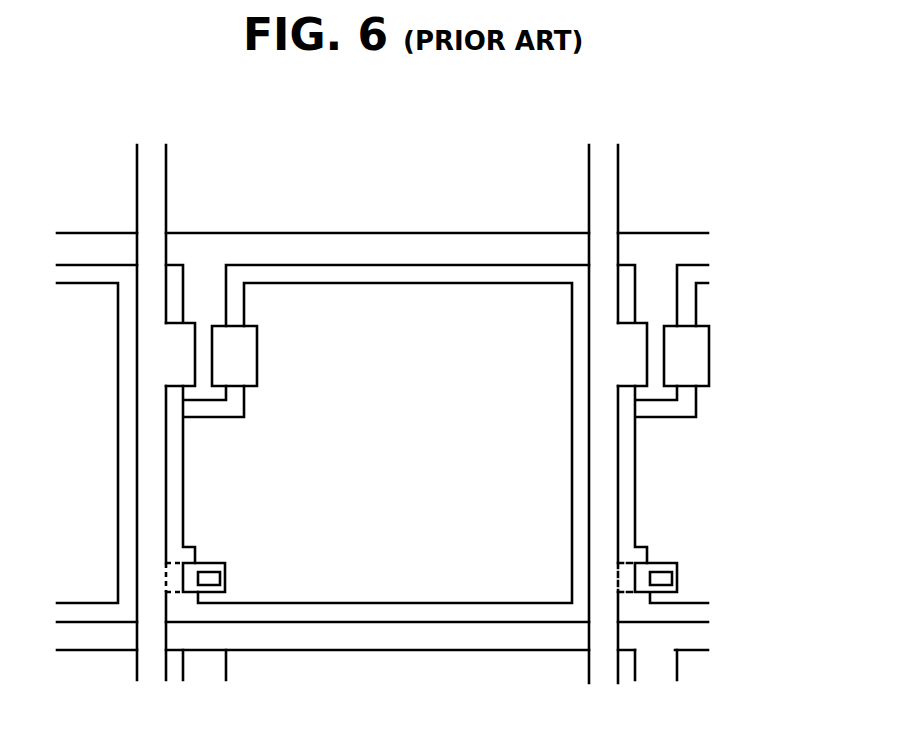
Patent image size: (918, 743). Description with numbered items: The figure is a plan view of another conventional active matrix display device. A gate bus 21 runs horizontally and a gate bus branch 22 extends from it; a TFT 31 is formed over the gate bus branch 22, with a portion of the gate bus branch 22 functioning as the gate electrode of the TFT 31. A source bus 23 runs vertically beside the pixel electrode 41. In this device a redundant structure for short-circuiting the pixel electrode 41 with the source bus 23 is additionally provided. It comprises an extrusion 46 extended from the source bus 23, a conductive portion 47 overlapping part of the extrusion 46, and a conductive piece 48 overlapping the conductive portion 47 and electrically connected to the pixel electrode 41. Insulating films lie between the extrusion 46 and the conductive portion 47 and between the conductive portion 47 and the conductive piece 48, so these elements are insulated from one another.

The gate bus 21 is at (460, 248).
The gate bus branch 22 is at (195, 303).
The source bus 23 is at (157, 177).
The TFT 31 is at (203, 358).
The pixel electrode 41 is at (405, 463).
The extrusion 46 is at (178, 593).
The conductive portion 47 is at (203, 569).
The conductive piece 48 is at (214, 578).